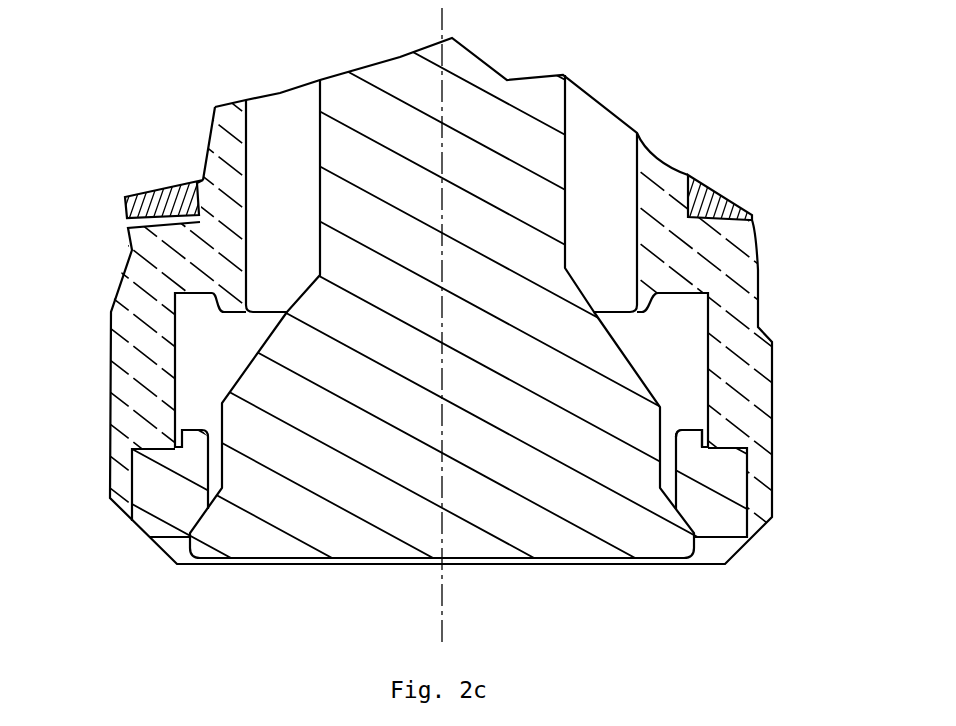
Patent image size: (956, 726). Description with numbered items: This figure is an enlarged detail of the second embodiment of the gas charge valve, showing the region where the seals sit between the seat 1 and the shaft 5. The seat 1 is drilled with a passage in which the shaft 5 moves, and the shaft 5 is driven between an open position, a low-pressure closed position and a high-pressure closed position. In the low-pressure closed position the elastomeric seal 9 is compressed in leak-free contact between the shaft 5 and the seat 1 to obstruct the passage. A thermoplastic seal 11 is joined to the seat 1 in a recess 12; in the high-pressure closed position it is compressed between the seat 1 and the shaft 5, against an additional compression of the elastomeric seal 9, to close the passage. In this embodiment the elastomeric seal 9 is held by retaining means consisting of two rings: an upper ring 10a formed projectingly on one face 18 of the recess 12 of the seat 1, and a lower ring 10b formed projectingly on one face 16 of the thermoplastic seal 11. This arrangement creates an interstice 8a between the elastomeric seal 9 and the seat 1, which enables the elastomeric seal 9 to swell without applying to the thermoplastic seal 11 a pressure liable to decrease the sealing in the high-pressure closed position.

The seat 1 is at (727, 254).
The shaft 5 is at (510, 100).
The interstice 8a is at (202, 302).
The elastomeric seal 9 is at (672, 351).
The upper ring 10a is at (651, 301).
The lower ring 10b is at (691, 436).
The thermoplastic seal 11 is at (719, 499).
The recess 12 is at (171, 345).
The face of the thermoplastic seal 16 is at (152, 452).
The face of the recess 18 is at (212, 290).